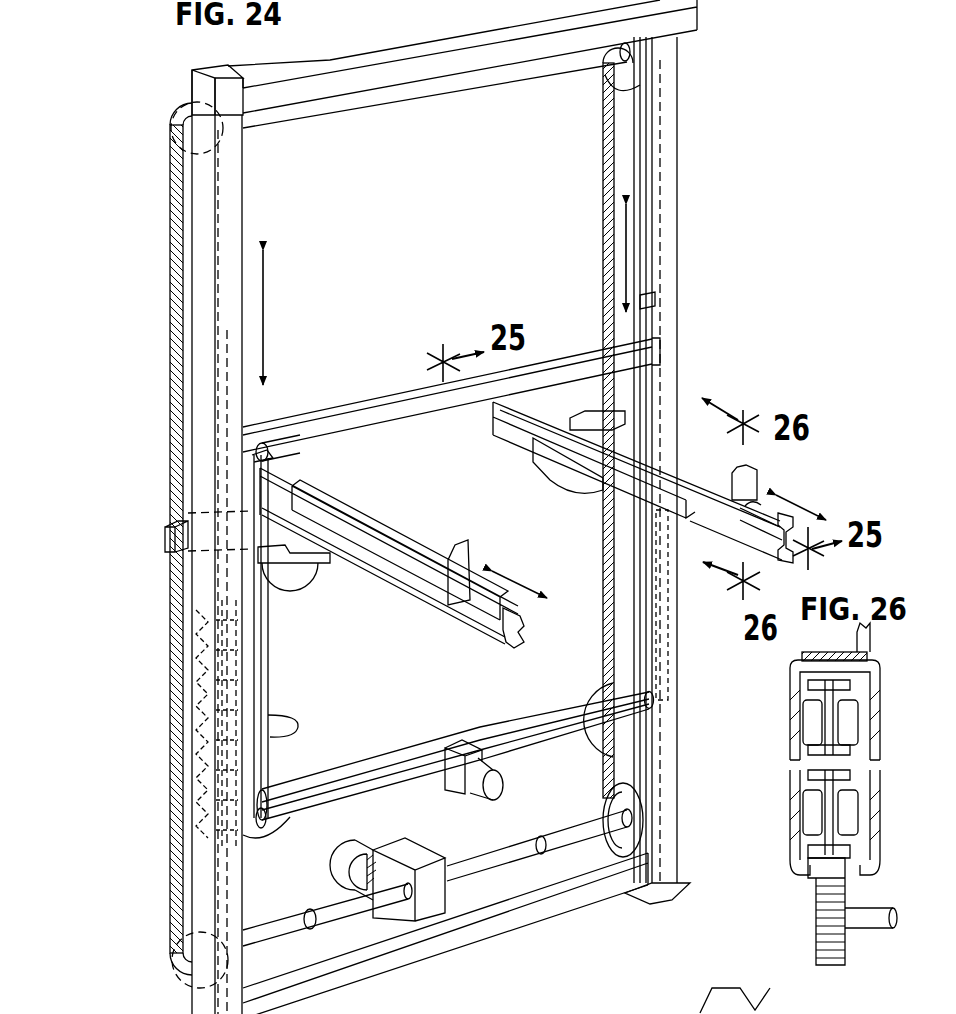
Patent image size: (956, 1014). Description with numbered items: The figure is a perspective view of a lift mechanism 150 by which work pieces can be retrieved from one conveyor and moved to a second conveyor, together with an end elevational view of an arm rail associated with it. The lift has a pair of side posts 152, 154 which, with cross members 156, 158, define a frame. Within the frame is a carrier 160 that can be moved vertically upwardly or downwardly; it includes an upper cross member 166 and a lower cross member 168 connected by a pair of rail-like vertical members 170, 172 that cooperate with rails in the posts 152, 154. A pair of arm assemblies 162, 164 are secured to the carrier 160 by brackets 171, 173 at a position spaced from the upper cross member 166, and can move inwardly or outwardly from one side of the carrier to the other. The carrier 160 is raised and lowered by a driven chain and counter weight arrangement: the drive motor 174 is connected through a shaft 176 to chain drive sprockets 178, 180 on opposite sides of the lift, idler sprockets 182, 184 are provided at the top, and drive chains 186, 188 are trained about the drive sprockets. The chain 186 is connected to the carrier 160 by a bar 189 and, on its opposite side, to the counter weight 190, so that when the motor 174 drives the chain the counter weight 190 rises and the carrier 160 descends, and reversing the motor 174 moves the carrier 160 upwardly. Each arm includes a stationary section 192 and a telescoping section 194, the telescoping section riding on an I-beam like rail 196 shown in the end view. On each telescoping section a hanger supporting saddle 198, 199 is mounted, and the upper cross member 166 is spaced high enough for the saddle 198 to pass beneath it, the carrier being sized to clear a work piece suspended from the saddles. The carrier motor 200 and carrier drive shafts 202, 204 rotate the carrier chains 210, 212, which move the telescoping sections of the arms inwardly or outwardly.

In FIG. 24, the lift mechanism 150 is at (738, 89).
In FIG. 24, the side post 152 is at (680, 210).
In FIG. 24, the side post 154 is at (200, 262).
In FIG. 24, the cross member 156 is at (549, 916).
In FIG. 24, the cross member 158 is at (456, 32).
In FIG. 24, the carrier 160 is at (270, 419).
In FIG. 24, the arm assembly 162 is at (357, 511).
In FIG. 24, the arm assembly 164 is at (524, 448).
In FIG. 24, the upper cross member 166 is at (655, 300).
In FIG. 24, the lower cross member 168 is at (655, 696).
In FIG. 24, the vertical member 170 is at (252, 448).
In FIG. 24, the bracket 171 is at (250, 604).
In FIG. 24, the vertical member 172 is at (660, 345).
In FIG. 24, the bracket 173 is at (572, 490).
In FIG. 24, the drive motor 174 is at (413, 922).
In FIG. 24, the shaft 176 is at (483, 868).
In FIG. 24, the chain drive sprocket 178 is at (613, 870).
In FIG. 24, the chain drive sprocket 180 is at (170, 955).
In FIG. 24, the idler sprocket 182 is at (612, 75).
In FIG. 24, the idler sprocket 184 is at (182, 135).
In FIG. 24, the drive chain 186 is at (170, 232).
In FIG. 24, the drive chain 188 is at (613, 175).
In FIG. 24, the bar 189 is at (166, 540).
In FIG. 24, the counter weight 190 is at (206, 765).
In FIG. 24, the stationary section 192 is at (497, 418).
In FIG. 24, the telescoping section 194 is at (798, 535).
In FIG. 26, the I-beam like rail 196 is at (790, 852).
In FIG. 24, the hanger supporting saddle 198 is at (750, 478).
In FIG. 24, the hanger supporting saddle 199 is at (427, 597).
In FIG. 24, the carrier motor 200 is at (503, 790).
In FIG. 24, the carrier drive shaft 202 is at (250, 840).
In FIG. 24, the carrier drive shaft 204 is at (600, 765).
In FIG. 24, the carrier chain 210 is at (268, 715).
In FIG. 24, the carrier chain 212 is at (632, 658).